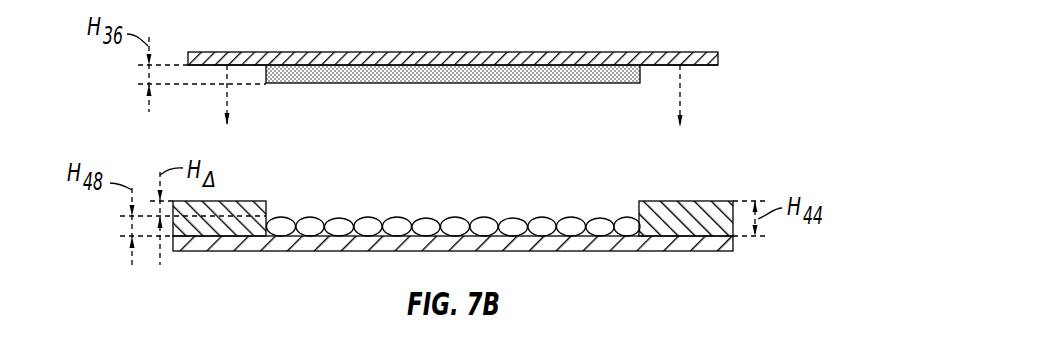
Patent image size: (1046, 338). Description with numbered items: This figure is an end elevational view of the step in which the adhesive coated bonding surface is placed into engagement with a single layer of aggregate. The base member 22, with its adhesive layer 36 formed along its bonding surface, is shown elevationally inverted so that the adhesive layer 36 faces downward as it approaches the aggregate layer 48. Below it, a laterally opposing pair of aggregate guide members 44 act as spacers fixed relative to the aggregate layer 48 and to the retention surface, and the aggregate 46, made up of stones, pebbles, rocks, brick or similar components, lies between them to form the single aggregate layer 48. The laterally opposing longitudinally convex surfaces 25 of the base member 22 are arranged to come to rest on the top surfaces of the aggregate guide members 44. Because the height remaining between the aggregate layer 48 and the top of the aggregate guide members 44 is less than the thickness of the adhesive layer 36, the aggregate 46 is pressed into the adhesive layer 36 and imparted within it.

The base member 22 is at (697, 66).
The longitudinally convex surfaces 25 is at (208, 66).
The adhesive layer 36 is at (507, 84).
The aggregate guide members 44 is at (235, 201).
The aggregate 46 is at (357, 219).
The aggregate layer 48 is at (640, 178).